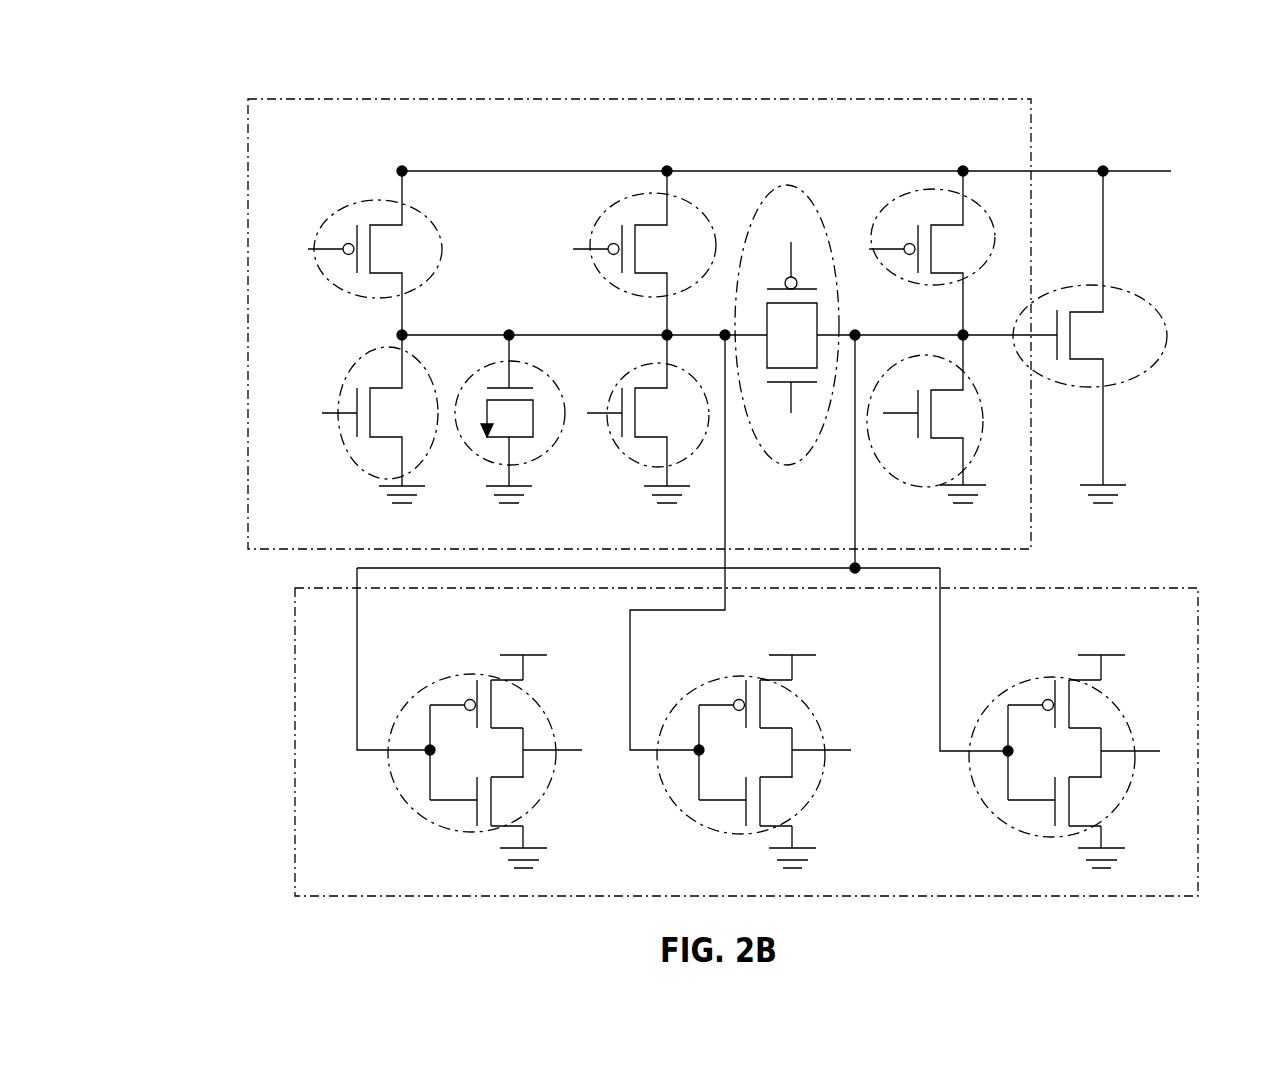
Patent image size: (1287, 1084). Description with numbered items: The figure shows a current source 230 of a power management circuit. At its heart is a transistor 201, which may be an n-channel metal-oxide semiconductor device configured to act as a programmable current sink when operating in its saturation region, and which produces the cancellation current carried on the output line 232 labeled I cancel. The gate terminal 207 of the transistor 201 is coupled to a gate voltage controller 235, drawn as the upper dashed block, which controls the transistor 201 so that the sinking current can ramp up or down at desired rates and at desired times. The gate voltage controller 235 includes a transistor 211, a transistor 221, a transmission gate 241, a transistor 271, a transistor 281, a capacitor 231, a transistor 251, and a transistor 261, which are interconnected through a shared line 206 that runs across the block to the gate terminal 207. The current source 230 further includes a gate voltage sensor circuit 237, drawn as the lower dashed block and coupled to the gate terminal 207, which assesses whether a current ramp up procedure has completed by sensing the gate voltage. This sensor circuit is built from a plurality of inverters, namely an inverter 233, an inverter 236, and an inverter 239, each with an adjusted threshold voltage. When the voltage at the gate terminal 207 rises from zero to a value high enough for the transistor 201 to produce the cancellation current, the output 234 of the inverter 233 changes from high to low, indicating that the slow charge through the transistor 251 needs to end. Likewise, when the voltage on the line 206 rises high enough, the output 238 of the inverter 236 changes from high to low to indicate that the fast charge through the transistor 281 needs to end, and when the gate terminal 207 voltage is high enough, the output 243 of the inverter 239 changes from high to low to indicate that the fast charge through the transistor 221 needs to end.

The current source 230 is at (1172, 90).
The gate voltage controller 235 is at (248, 370).
The gate voltage sensor circuit 237 is at (295, 676).
The cancellation current output line (Icancel) 232 is at (813, 158).
The line 206 is at (553, 335).
The transistor 251 is at (347, 207).
The transistor 281 is at (597, 223).
The transistor 221 is at (930, 190).
The transmission gate 241 is at (803, 192).
The transistor 261 is at (368, 477).
The capacitor 231 is at (483, 460).
The transistor 271 is at (630, 462).
The transistor 211 is at (910, 488).
The transistor 201 is at (1130, 290).
The gate terminal 207 is at (1055, 343).
The inverter 233 is at (415, 805).
The inverter 236 is at (668, 797).
The inverter 239 is at (990, 805).
The output 234 is at (575, 748).
The output 238 is at (845, 750).
The output 243 is at (1150, 752).